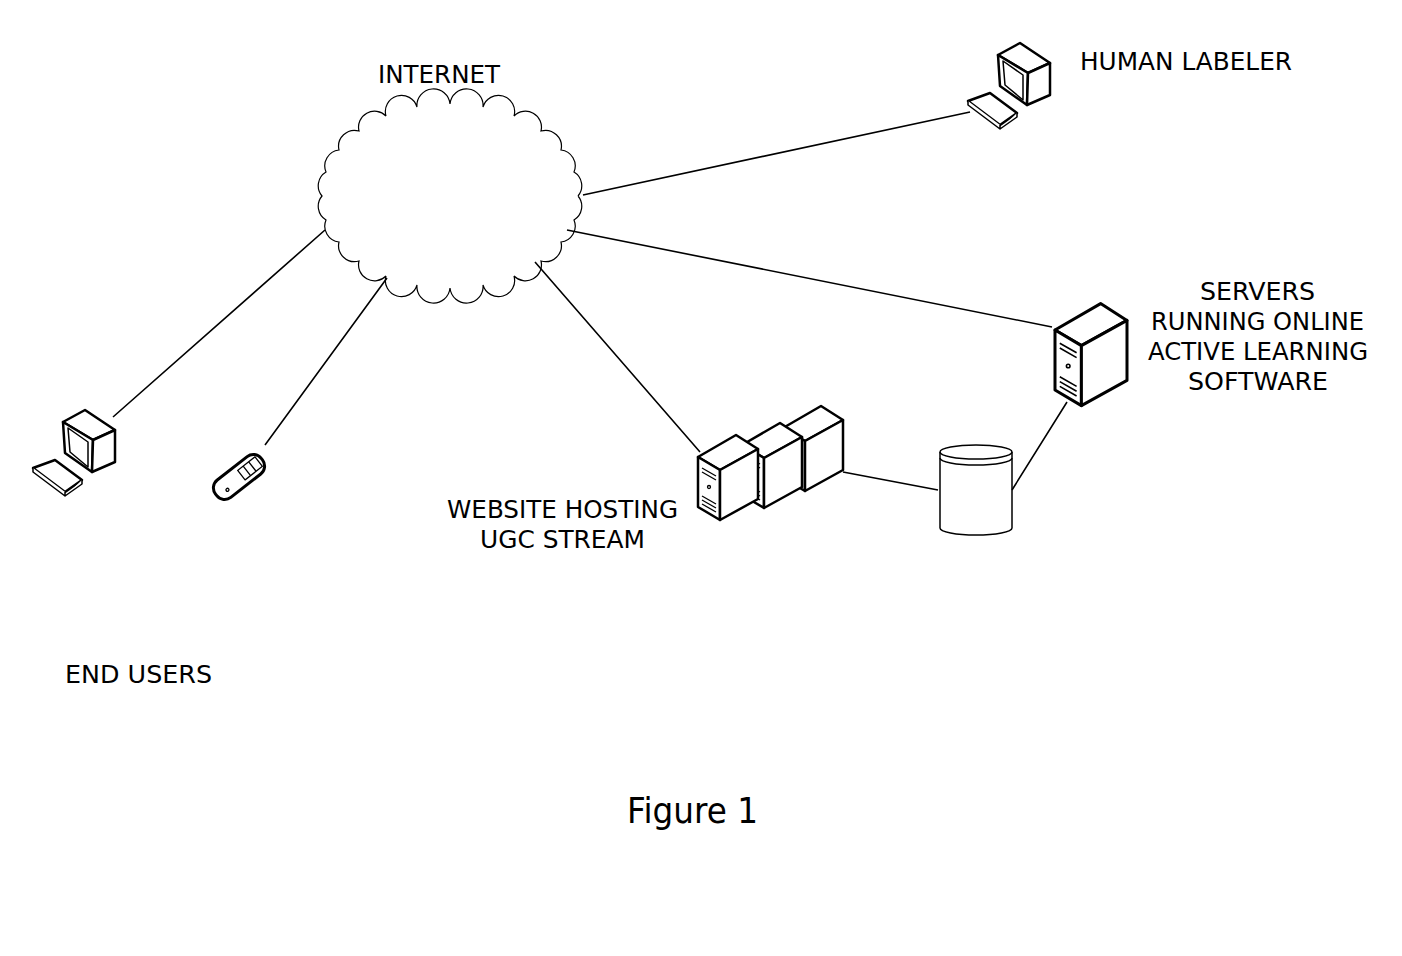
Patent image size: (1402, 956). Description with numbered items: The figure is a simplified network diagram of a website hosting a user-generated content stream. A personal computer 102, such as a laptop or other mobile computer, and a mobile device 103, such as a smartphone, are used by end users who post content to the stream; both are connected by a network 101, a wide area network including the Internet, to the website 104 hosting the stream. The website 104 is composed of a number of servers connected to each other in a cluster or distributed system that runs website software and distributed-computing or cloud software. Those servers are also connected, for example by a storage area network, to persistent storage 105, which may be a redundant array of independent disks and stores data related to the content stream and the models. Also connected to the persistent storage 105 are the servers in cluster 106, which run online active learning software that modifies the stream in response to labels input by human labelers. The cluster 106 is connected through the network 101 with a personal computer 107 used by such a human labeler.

The network 101 is at (557, 148).
The personal computer 102 is at (95, 472).
The mobile device 103 is at (243, 498).
The website 104 is at (762, 505).
The persistent storage 105 is at (977, 532).
The cluster 106 is at (1102, 392).
The personal computer 107 is at (1030, 112).